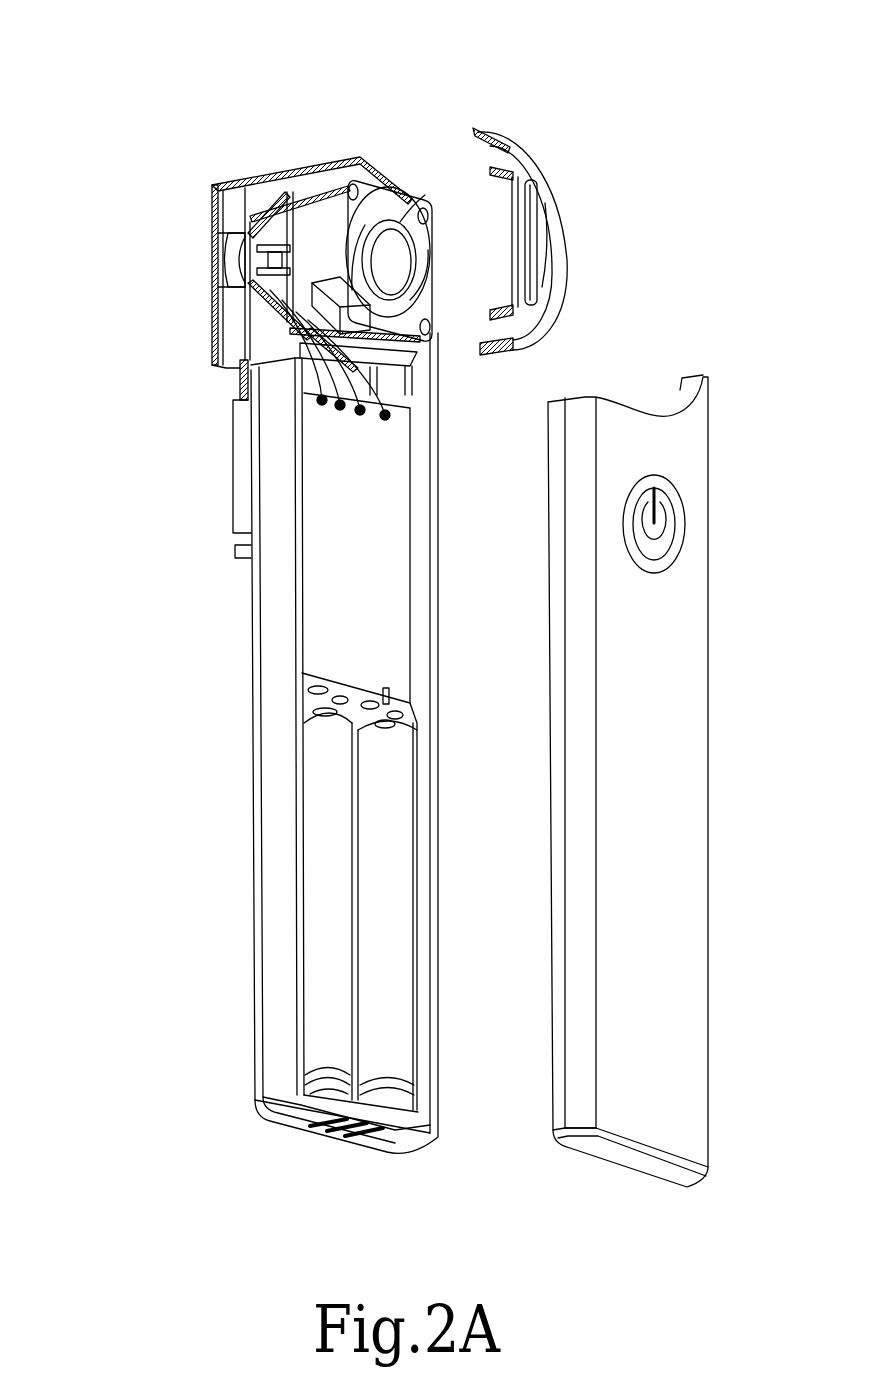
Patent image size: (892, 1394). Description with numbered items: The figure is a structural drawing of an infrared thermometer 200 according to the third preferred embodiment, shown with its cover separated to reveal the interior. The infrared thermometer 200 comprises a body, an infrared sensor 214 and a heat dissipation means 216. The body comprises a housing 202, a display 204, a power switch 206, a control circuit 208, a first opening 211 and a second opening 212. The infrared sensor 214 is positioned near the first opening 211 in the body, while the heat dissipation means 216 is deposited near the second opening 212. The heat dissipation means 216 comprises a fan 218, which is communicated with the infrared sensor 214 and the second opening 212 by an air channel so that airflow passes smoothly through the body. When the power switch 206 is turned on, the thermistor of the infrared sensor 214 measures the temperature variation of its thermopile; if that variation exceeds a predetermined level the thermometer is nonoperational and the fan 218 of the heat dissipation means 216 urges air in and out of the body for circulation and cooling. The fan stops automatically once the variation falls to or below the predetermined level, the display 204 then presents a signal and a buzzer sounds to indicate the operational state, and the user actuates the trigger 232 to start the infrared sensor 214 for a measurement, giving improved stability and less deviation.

The infrared thermometer 200 is at (333, 145).
The housing 202 is at (272, 1068).
The display 204 is at (233, 513).
The power switch 206 is at (658, 523).
The control circuit 208 is at (380, 562).
The first opening 211 is at (217, 265).
The second opening 212 is at (450, 280).
The infrared sensor 214 is at (237, 240).
The heat dissipation means 216 is at (377, 173).
The fan 218 is at (395, 262).
The trigger 232 is at (235, 550).